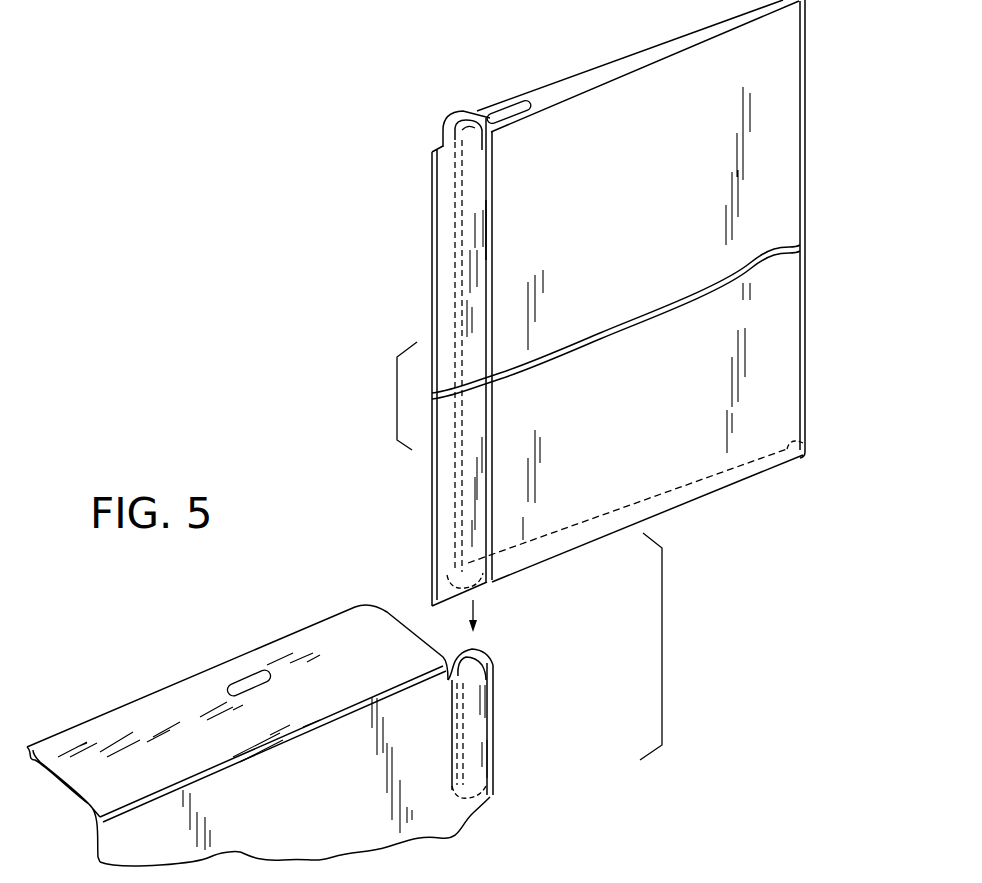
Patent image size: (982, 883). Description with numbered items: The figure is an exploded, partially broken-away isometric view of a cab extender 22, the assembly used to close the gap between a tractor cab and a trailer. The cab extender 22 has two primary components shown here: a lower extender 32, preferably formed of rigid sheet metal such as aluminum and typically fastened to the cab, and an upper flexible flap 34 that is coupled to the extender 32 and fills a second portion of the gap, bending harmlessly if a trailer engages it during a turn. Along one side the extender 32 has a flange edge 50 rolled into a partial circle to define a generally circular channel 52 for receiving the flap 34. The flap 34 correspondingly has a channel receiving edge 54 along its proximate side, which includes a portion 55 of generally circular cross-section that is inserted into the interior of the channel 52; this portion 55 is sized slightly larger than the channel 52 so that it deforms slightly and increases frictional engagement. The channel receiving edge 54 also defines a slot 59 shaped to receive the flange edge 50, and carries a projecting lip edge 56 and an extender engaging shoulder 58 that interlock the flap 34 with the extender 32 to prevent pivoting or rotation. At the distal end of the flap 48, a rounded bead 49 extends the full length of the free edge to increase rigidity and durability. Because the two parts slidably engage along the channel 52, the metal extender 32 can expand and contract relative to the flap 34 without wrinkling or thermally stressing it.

The cab extender 22 is at (311, 730).
The extender 32 is at (398, 850).
The flap 34 is at (712, 494).
The distal end of the flap 48 is at (806, 418).
The rounded bead 49 is at (801, 458).
The flange edge 50 is at (494, 713).
The channel 52 is at (500, 641).
The channel receiving edge 54 is at (446, 122).
The portion of generally circular cross-section 55 is at (468, 133).
The projecting lip edge 56 is at (414, 160).
The extender engaging shoulder 58 is at (489, 145).
The slot 59 is at (490, 230).